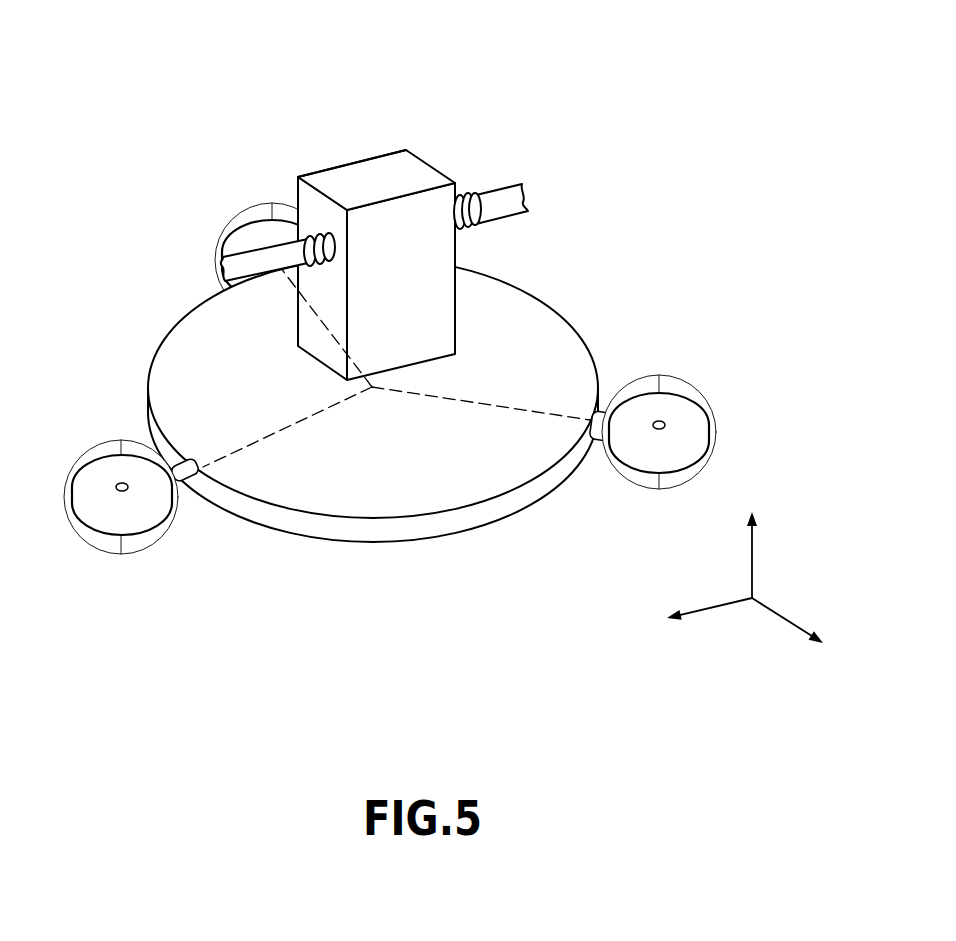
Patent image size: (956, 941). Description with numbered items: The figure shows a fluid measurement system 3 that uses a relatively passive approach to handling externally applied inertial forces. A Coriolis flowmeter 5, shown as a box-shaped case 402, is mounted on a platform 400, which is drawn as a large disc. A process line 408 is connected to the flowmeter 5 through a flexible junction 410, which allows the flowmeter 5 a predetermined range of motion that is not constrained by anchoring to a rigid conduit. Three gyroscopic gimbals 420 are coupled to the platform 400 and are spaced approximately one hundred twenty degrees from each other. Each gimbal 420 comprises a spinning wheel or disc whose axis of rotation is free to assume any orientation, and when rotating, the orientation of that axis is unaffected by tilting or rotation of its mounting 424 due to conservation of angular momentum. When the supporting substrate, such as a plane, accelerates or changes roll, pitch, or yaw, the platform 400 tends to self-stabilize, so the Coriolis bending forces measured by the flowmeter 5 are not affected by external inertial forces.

The fluid measurement system 3 is at (139, 73).
The flowmeter 5 is at (380, 165).
The platform 400 is at (535, 305).
The case 402 is at (443, 280).
The process line 408 is at (233, 266).
The flexible junction 410 is at (468, 187).
The gyroscopic gimbal 420 is at (223, 190).
The mounting 424 is at (188, 480).